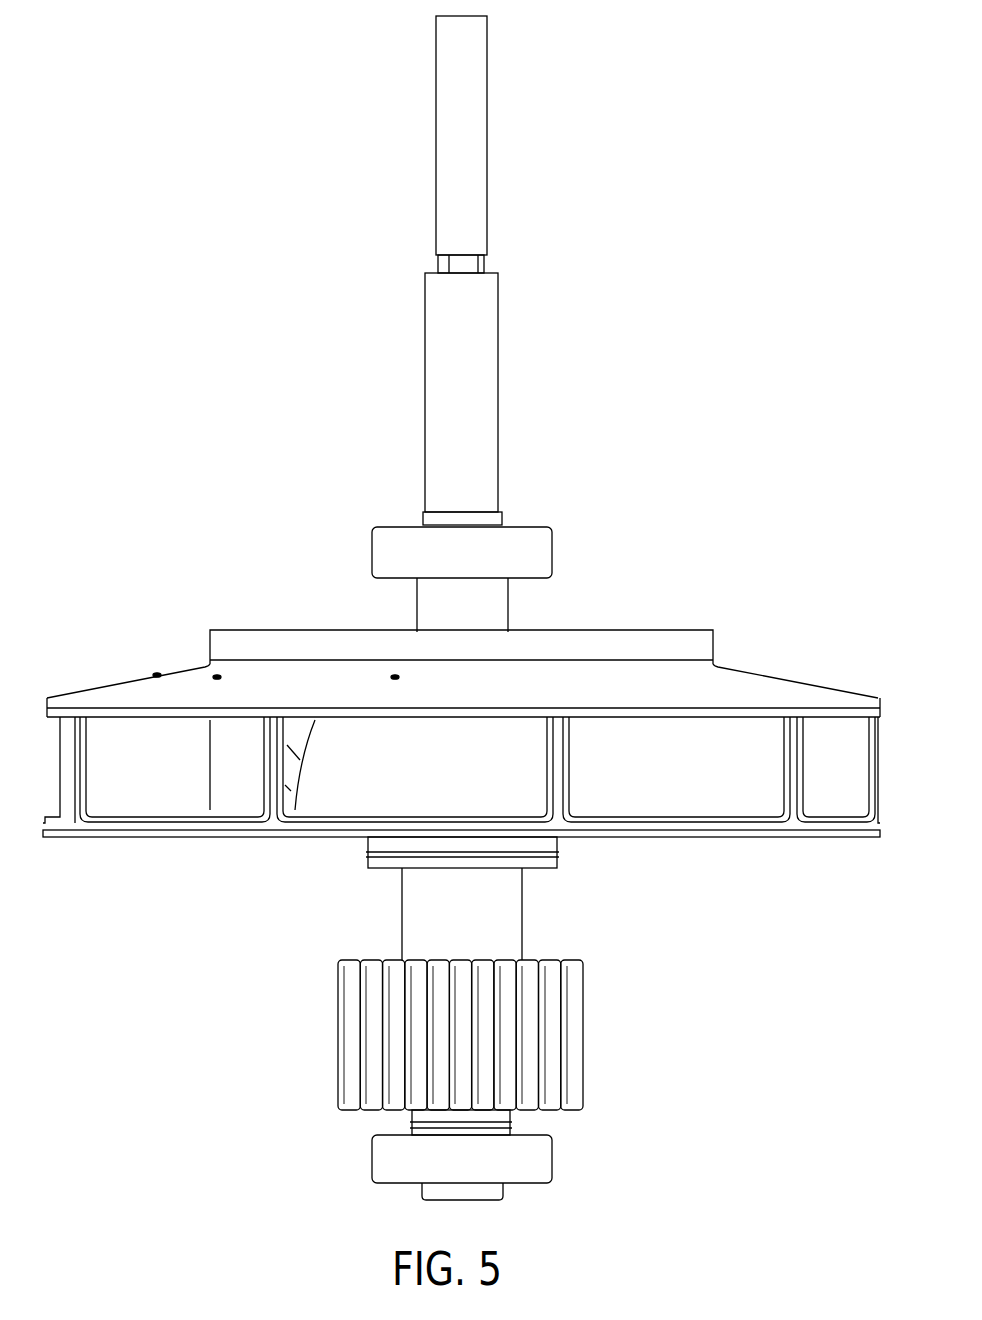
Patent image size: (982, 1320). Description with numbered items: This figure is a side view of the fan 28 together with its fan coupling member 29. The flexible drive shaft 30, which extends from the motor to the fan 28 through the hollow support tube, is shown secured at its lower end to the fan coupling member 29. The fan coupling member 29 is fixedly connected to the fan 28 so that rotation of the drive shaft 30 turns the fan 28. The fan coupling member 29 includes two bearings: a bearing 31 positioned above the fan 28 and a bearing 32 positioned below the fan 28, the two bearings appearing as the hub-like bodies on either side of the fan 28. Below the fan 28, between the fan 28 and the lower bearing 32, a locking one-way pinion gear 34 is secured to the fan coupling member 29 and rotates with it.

The fan 28 is at (760, 683).
The fan coupling member 29 is at (498, 395).
The flexible drive shaft 30 is at (488, 163).
The bearing 31 is at (538, 552).
The bearing 32 is at (542, 1157).
The locking one-way pinion gear 34 is at (583, 998).